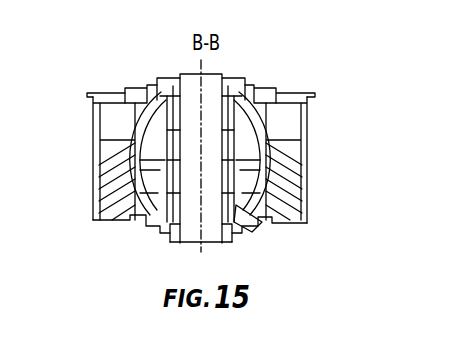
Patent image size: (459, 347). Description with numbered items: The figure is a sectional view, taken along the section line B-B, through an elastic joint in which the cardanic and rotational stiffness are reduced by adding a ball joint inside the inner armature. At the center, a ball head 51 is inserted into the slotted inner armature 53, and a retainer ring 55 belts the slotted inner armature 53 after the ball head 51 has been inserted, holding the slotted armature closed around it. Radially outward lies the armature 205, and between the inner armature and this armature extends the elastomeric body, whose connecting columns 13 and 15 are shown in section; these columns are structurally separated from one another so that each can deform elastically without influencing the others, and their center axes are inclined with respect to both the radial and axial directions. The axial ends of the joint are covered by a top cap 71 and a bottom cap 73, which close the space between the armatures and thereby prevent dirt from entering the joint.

The connecting column 13 is at (268, 229).
The connecting column 15 is at (137, 243).
The ball head 51 is at (258, 87).
The slotted inner armature 53 is at (92, 161).
The retainer ring 55 is at (148, 83).
The top cap 71 is at (262, 230).
The bottom cap 73 is at (115, 85).
The outer armature 205 is at (307, 152).